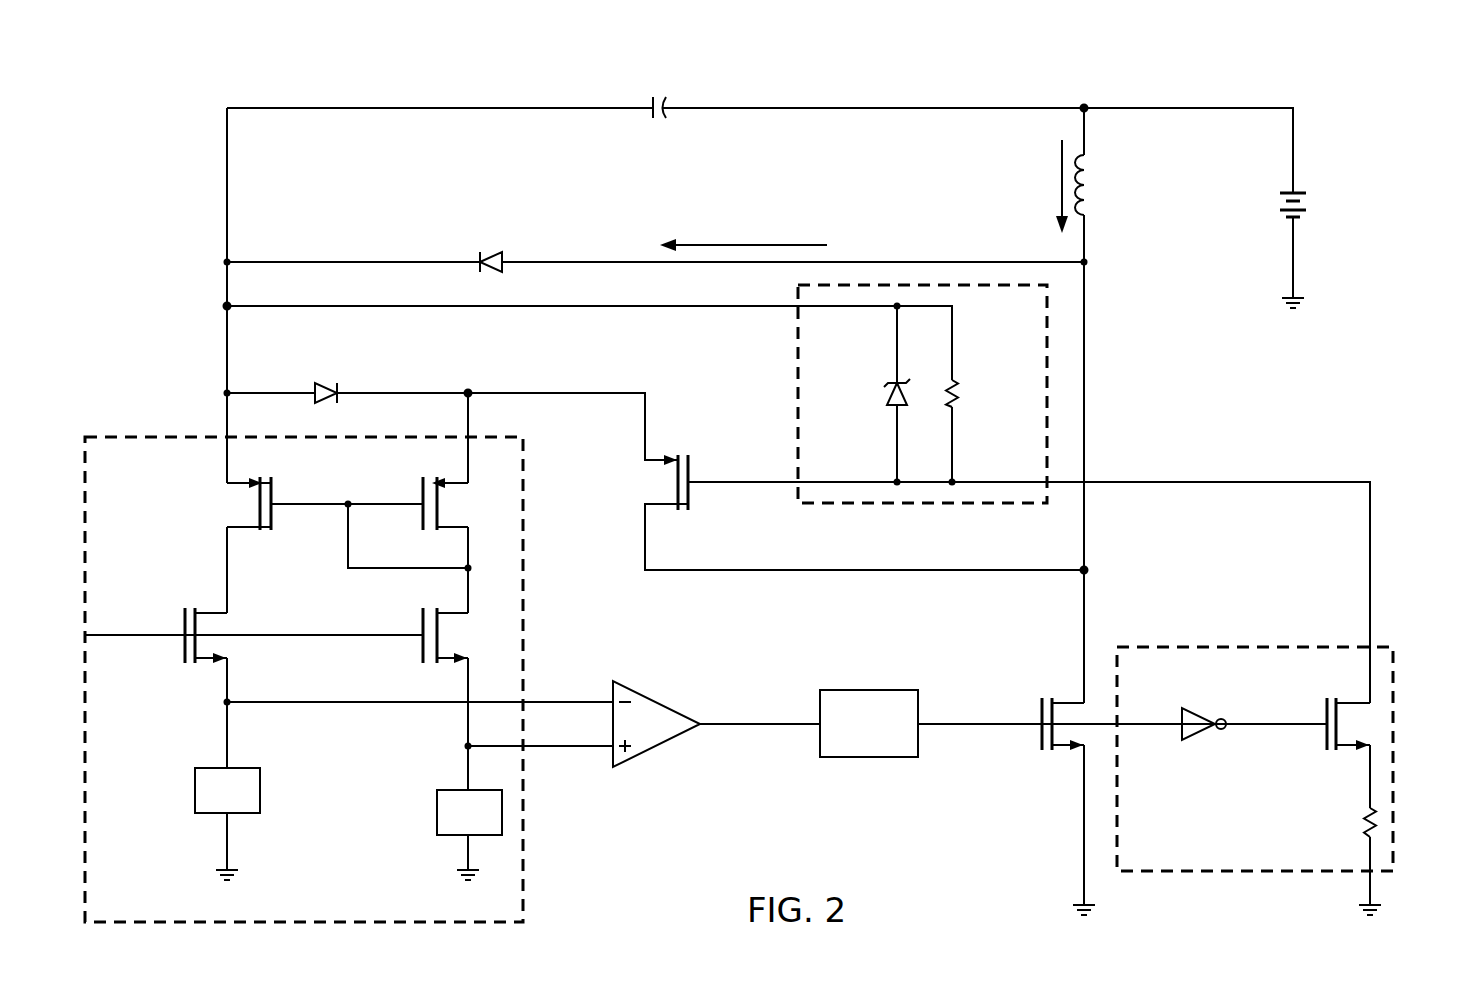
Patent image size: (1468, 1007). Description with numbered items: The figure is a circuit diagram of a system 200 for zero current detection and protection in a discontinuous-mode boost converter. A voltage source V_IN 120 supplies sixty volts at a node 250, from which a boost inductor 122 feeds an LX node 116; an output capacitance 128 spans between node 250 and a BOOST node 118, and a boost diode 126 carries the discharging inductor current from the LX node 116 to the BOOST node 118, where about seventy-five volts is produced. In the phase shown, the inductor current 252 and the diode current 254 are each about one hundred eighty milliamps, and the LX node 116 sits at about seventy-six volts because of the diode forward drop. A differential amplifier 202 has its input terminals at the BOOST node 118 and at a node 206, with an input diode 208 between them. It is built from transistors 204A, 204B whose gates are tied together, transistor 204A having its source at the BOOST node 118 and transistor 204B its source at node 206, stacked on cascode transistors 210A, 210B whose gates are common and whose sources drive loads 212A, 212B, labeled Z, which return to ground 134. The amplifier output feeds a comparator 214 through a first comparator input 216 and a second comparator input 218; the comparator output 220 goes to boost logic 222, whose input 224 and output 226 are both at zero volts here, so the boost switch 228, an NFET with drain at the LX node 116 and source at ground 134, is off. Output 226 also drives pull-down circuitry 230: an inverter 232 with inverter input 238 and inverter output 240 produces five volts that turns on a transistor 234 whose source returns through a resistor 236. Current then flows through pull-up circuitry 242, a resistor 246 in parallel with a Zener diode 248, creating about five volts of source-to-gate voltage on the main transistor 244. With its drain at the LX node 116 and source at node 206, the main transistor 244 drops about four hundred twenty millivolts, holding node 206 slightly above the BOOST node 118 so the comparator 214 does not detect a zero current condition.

The system 200 is at (140, 97).
The output capacitance 128 is at (658, 96).
The node 250 is at (1087, 105).
The current 252 is at (1058, 157).
The boost inductor 122 is at (1092, 183).
The voltage source V_IN 120 is at (1310, 206).
The ground 134 is at (1304, 303).
The boost diode 126 is at (491, 252).
The current 254 is at (798, 245).
The BOOST node 118 is at (231, 312).
The input diode 208 is at (327, 383).
The node 206 is at (466, 388).
The pull-up circuitry 242 is at (792, 364).
The Zener diode 248 is at (889, 393).
The resistor 246 is at (957, 396).
The transistor M1 244 is at (691, 468).
The LX node 116 is at (1080, 574).
The differential amplifier 202 is at (532, 597).
The transistor 204A is at (276, 531).
The transistor 204B is at (421, 491).
The cascode transistor 210A is at (184, 650).
The cascode transistor 210B is at (423, 650).
The load 212A is at (194, 793).
The load 212B is at (437, 816).
The comparator 214 is at (646, 752).
The first comparator input 216 is at (608, 699).
The second comparator input 218 is at (608, 752).
The comparator output 220 is at (704, 718).
The boost logic 222 is at (890, 760).
The input 224 is at (816, 730).
The output 226 is at (920, 729).
The boost switch 228 is at (1040, 740).
The pull-down circuitry 230 is at (1258, 640).
The inverter 232 is at (1226, 699).
The inverter input 238 is at (1180, 733).
The inverter output 240 is at (1226, 732).
The transistor 234 is at (1325, 742).
The resistor 236 is at (1365, 823).